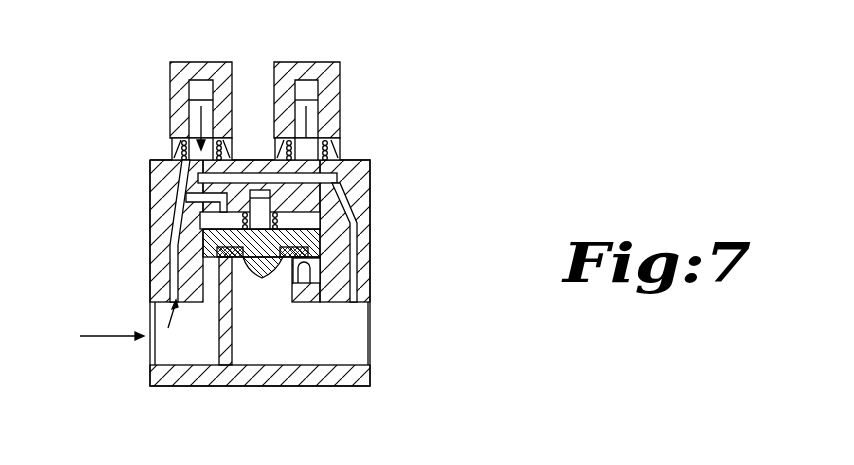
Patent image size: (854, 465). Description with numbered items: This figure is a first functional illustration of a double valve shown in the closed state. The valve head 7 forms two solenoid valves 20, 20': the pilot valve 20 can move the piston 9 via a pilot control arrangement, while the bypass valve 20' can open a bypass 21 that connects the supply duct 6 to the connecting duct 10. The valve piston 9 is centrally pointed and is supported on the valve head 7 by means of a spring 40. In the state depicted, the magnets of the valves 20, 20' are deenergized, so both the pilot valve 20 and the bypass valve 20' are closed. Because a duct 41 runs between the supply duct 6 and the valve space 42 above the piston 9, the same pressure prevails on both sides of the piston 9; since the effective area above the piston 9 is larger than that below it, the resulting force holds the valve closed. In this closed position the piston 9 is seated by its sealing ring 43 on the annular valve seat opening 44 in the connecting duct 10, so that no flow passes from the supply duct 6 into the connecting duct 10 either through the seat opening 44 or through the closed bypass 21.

The supply duct 6 is at (188, 330).
The valve head 7 is at (358, 195).
The piston 9 is at (342, 336).
The connecting duct 10 is at (257, 257).
The solenoid valve 20 is at (324, 78).
The solenoid valve 20' is at (218, 83).
The bypass 21 is at (340, 140).
The spring 40 is at (260, 237).
The duct 41 is at (192, 186).
The valve space 42 is at (287, 214).
The sealing ring 43 is at (235, 219).
The annular valve seat opening 44 is at (233, 258).